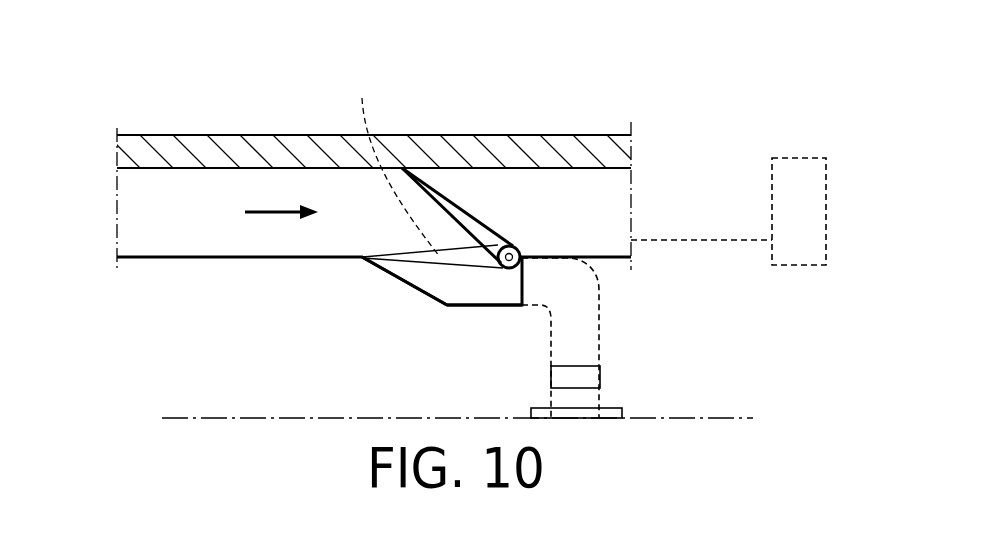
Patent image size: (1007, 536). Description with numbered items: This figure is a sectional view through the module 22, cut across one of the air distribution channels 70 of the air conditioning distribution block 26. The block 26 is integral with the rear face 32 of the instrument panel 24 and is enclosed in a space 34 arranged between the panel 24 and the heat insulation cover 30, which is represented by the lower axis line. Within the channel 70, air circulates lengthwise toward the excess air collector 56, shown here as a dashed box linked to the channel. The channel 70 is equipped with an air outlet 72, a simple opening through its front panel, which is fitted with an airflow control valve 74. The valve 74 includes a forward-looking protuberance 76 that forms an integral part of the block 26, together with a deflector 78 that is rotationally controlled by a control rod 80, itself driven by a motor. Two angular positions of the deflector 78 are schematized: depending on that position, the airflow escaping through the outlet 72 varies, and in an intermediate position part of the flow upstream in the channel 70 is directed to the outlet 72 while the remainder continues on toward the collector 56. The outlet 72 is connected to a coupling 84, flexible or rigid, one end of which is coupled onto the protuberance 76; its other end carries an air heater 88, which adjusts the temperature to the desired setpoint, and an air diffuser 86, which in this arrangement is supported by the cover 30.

The module 22 is at (450, 127).
The instrument panel 24 is at (198, 147).
The rear face 32 is at (226, 170).
The air distribution channel 70 is at (166, 225).
The space 34 is at (222, 305).
The air outlet 72 is at (399, 167).
The airflow control valve 74 is at (410, 291).
The protuberance 76 is at (483, 307).
The deflector 78 is at (478, 232).
The control rod 80 is at (513, 252).
The air conditioning distribution block 26 is at (645, 220).
The excess air collector 56 is at (807, 250).
The coupling 84 is at (588, 318).
The air heater 88 is at (589, 375).
The air diffuser 86 is at (577, 413).
The heat insulation cover 30 is at (200, 418).